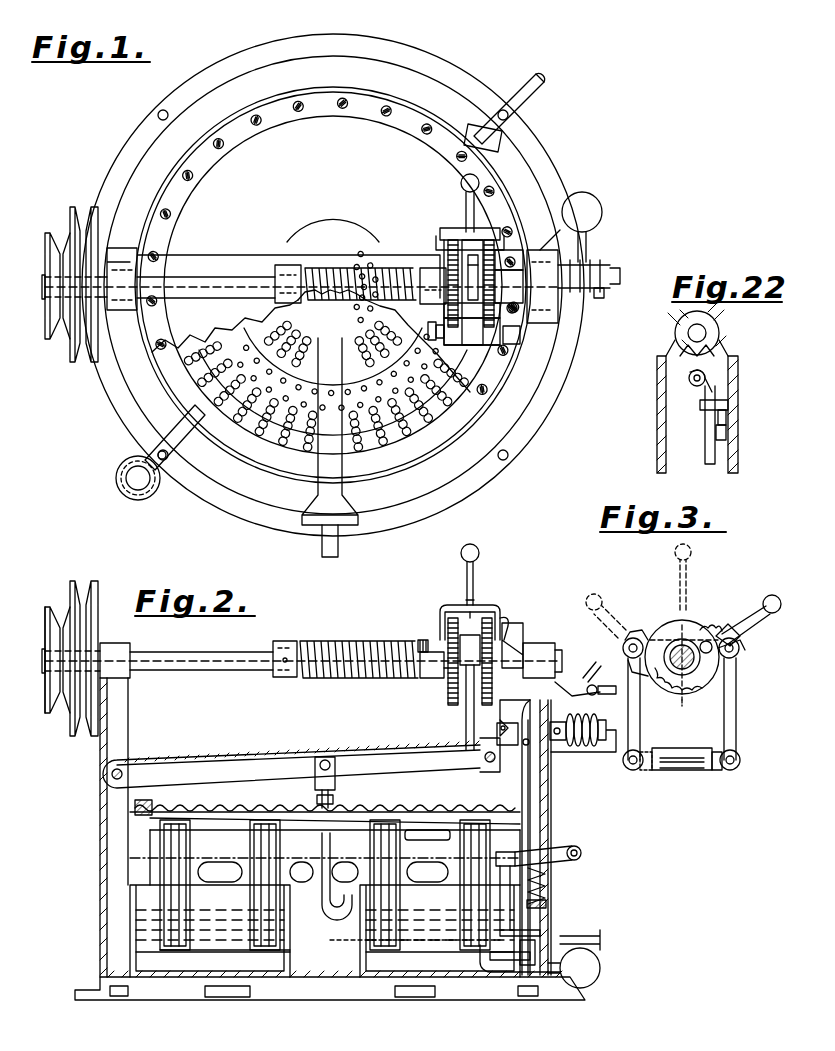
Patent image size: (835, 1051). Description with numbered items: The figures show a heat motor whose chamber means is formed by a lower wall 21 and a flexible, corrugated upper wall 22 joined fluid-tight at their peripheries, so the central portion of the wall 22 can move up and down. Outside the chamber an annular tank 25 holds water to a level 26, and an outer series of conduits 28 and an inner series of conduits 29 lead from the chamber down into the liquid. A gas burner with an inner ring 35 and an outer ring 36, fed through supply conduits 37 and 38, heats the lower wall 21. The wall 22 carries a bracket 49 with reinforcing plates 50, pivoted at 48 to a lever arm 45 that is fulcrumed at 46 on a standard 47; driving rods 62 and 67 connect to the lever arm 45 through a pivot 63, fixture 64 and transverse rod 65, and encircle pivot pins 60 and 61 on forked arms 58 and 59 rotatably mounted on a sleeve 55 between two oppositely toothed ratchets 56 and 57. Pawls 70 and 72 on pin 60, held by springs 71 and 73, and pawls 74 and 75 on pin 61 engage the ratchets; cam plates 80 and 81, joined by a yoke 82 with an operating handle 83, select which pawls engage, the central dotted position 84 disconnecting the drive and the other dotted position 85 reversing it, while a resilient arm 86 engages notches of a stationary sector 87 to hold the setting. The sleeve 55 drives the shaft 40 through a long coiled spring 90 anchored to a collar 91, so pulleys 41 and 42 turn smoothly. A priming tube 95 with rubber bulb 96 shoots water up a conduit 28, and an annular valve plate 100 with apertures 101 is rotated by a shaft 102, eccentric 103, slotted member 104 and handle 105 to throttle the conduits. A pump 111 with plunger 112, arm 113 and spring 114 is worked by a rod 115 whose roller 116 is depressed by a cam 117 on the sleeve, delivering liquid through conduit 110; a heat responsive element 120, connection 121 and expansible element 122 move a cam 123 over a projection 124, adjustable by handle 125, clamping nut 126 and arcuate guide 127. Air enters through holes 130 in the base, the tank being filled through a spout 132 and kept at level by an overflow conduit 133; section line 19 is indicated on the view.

In FIG. 2, the section line 19 is at (425, 935).
In FIG. 2, the lower wall 21 is at (300, 824).
In FIG. 1, the upper wall 22 is at (333, 285).
In FIG. 2, the upper wall 22 is at (530, 612).
In FIG. 2, the annular tank 25 is at (292, 954).
In FIG. 2, the liquid level 26 is at (196, 908).
In FIG. 1, the conduits 28 is at (208, 398).
In FIG. 2, the conduits 28 is at (190, 845).
In FIG. 1, the conduits 29 is at (352, 356).
In FIG. 2, the conduits 29 is at (250, 851).
In FIG. 1, the inner ring 35 is at (366, 310).
In FIG. 2, the inner ring 35 is at (300, 882).
In FIG. 1, the outer ring 36 is at (402, 428).
In FIG. 2, the outer ring 36 is at (430, 862).
In FIG. 1, the supply conduit 37 is at (343, 462).
In FIG. 1, the supply conduit 38 is at (340, 548).
In FIG. 1, the shaft 40 is at (178, 283).
In FIG. 2, the shaft 40 is at (178, 654).
In FIG. 2, the pulley 41 is at (76, 582).
In FIG. 2, the pulley 42 is at (49, 606).
In FIG. 1, the lever arm 45 is at (236, 255).
In FIG. 3, the lever arm 45 is at (672, 750).
In FIG. 2, the lever arm 45 is at (372, 748).
In FIG. 2, the fulcrum 46 is at (126, 775).
In FIG. 2, the standard 47 is at (100, 828).
In FIG. 2, the pivot 48 is at (330, 757).
In FIG. 2, the bracket 49 is at (335, 782).
In FIG. 2, the reinforcing plates 50 is at (368, 806).
In FIG. 1, the sleeve 55 is at (425, 275).
In FIG. 2, the sleeve 55 is at (432, 678).
In FIG. 1, the ratchet 56 is at (447, 285).
In FIG. 3, the ratchet 56 is at (700, 690).
In FIG. 2, the ratchet 56 is at (458, 690).
In FIG. 1, the ratchet 57 is at (495, 320).
In FIG. 3, the ratchet 57 is at (712, 630).
In FIG. 2, the ratchet 57 is at (488, 705).
In FIG. 1, the arm 58 is at (472, 292).
In FIG. 3, the arm 58 is at (660, 638).
In FIG. 1, the arm 59 is at (476, 256).
In FIG. 3, the arm 59 is at (712, 650).
In FIG. 1, the pivot pin 60 is at (428, 332).
In FIG. 3, the pivot pin 60 is at (623, 648).
In FIG. 2, the pivot pin 60 is at (420, 642).
In FIG. 1, the pivot pin 61 is at (545, 228).
In FIG. 3, the pivot pin 61 is at (739, 648).
In FIG. 3, the driving rod 62 is at (640, 702).
In FIG. 3, the pivot 63 is at (630, 770).
In FIG. 3, the fixture 64 is at (645, 770).
In FIG. 3, the rod 65 is at (672, 766).
In FIG. 3, the driving rod 67 is at (738, 712).
In FIG. 1, the pawl 70 is at (456, 345).
In FIG. 3, the pawl 70 is at (636, 634).
In FIG. 2, the pawl 70 is at (452, 618).
In FIG. 1, the spring 71 is at (441, 340).
In FIG. 2, the spring 71 is at (440, 668).
In FIG. 1, the pawl 72 is at (484, 345).
In FIG. 3, the pawl 72 is at (628, 662).
In FIG. 2, the pawl 72 is at (548, 658).
In FIG. 1, the spring 73 is at (515, 344).
In FIG. 1, the pawl 74 is at (455, 228).
In FIG. 3, the pawl 74 is at (740, 658).
In FIG. 1, the pawl 75 is at (516, 250).
In FIG. 3, the pawl 75 is at (726, 628).
In FIG. 1, the cam plate 80 is at (444, 308).
In FIG. 2, the cam plate 80 is at (452, 700).
In FIG. 1, the cam plate 81 is at (509, 286).
In FIG. 2, the cam plate 81 is at (500, 618).
In FIG. 1, the yoke 82 is at (490, 236).
In FIG. 2, the yoke 82 is at (484, 606).
In FIG. 1, the operating handle 83 is at (462, 180).
In FIG. 3, the operating handle 83 is at (775, 594).
In FIG. 2, the operating handle 83 is at (480, 560).
In FIG. 3, the central position 84 is at (694, 566).
In FIG. 3, the dotted line position 85 is at (604, 618).
In FIG. 1, the resilient arm 86 is at (535, 252).
In FIG. 2, the resilient arm 86 is at (508, 620).
In FIG. 2, the stationary sector 87 is at (523, 634).
In FIG. 1, the coiled spring 90 is at (318, 268).
In FIG. 2, the coiled spring 90 is at (356, 644).
In FIG. 1, the collar 91 is at (288, 284).
In FIG. 2, the collar 91 is at (285, 641).
In FIG. 2, the tube 95 is at (478, 977).
In FIG. 1, the rubber bulb 96 is at (590, 206).
In FIG. 2, the rubber bulb 96 is at (600, 968).
In FIG. 2, the plate 100 is at (205, 955).
In FIG. 2, the apertures 101 is at (168, 955).
In FIG. 2, the shaft 102 is at (537, 952).
In FIG. 2, the eccentric portion 103 is at (500, 962).
In FIG. 2, the member 104 is at (540, 932).
In FIG. 2, the handle 105 is at (590, 946).
In FIG. 2, the conduit 110 is at (336, 910).
In FIG. 2, the pump 111 is at (545, 880).
In FIG. 2, the plunger 112 is at (545, 868).
In FIG. 2, the arm 113 is at (550, 852).
In FIG. 2, the spring 114 is at (546, 904).
In FIG. 22, the rod 115 is at (702, 442).
In FIG. 2, the rod 115 is at (528, 790).
In FIG. 22, the roller 116 is at (692, 390).
In FIG. 2, the roller 116 is at (511, 720).
In FIG. 22, the cam 117 is at (722, 348).
In FIG. 3, the cam 117 is at (679, 713).
In FIG. 2, the cam 117 is at (550, 699).
In FIG. 2, the heat responsive element 120 is at (428, 830).
In FIG. 2, the connection 121 is at (551, 790).
In FIG. 2, the expansible element 122 is at (580, 748).
In FIG. 22, the cam 123 is at (728, 414).
In FIG. 2, the cam 123 is at (508, 745).
In FIG. 22, the projection 124 is at (728, 436).
In FIG. 2, the projection 124 is at (530, 748).
In FIG. 1, the handle 125 is at (616, 268).
In FIG. 2, the handle 125 is at (612, 694).
In FIG. 1, the clamping nut 126 is at (604, 294).
In FIG. 2, the clamping nut 126 is at (598, 688).
In FIG. 2, the arcuate guide 127 is at (580, 678).
In FIG. 2, the holes 130 is at (230, 997).
In FIG. 1, the spout 132 is at (148, 448).
In FIG. 1, the overflow conduit 133 is at (530, 90).